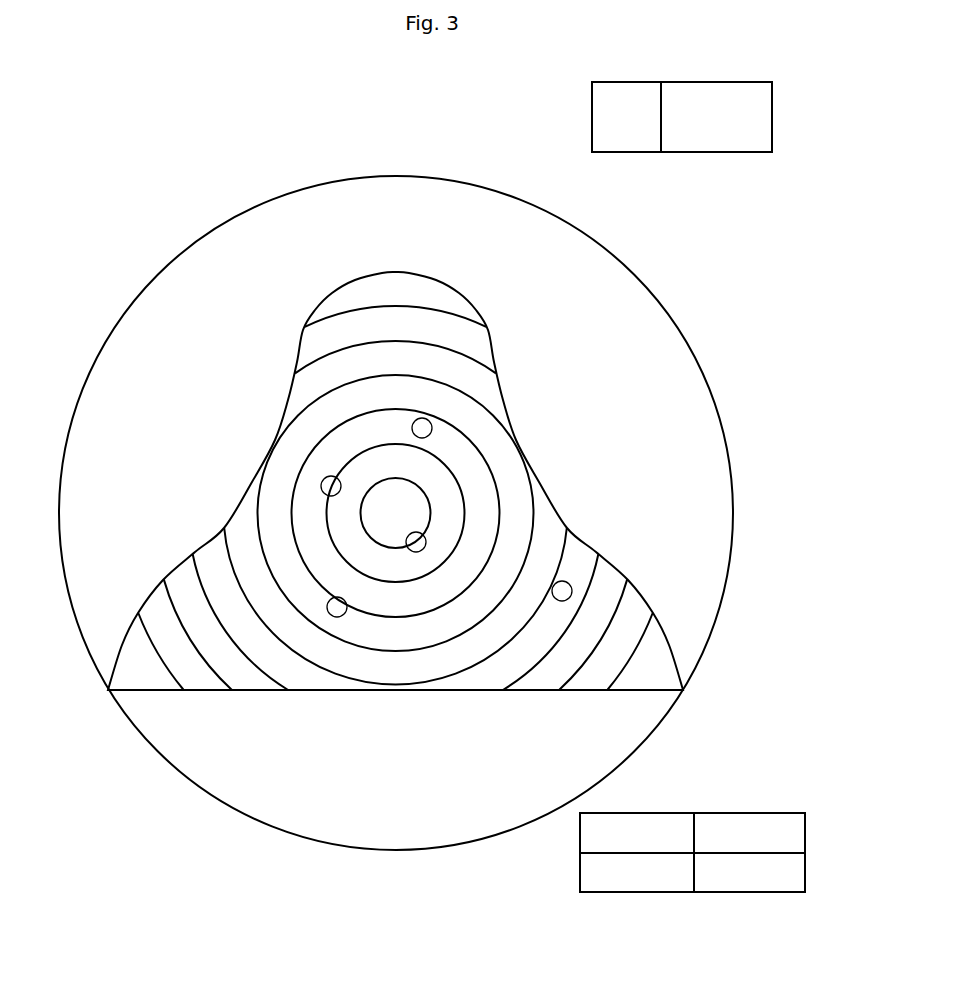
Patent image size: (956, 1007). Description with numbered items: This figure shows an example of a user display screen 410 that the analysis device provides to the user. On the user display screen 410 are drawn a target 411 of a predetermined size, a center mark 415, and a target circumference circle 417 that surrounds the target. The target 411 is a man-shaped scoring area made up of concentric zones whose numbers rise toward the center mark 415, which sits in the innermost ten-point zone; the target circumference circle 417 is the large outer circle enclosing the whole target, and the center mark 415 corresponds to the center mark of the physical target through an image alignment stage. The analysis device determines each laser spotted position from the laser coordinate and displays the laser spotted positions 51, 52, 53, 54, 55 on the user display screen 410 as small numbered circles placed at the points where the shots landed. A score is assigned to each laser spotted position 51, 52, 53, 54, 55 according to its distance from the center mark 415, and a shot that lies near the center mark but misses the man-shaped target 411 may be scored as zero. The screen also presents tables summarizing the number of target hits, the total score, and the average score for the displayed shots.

The user display screen 410 is at (168, 134).
The target 411 is at (468, 289).
The center mark 415 is at (379, 553).
The target circumference circle 417 is at (228, 816).
The laser spotted position 51 is at (425, 552).
The laser spotted position 52 is at (340, 618).
The laser spotted position 53 is at (567, 581).
The laser spotted position 54 is at (433, 428).
The laser spotted position 55 is at (320, 484).